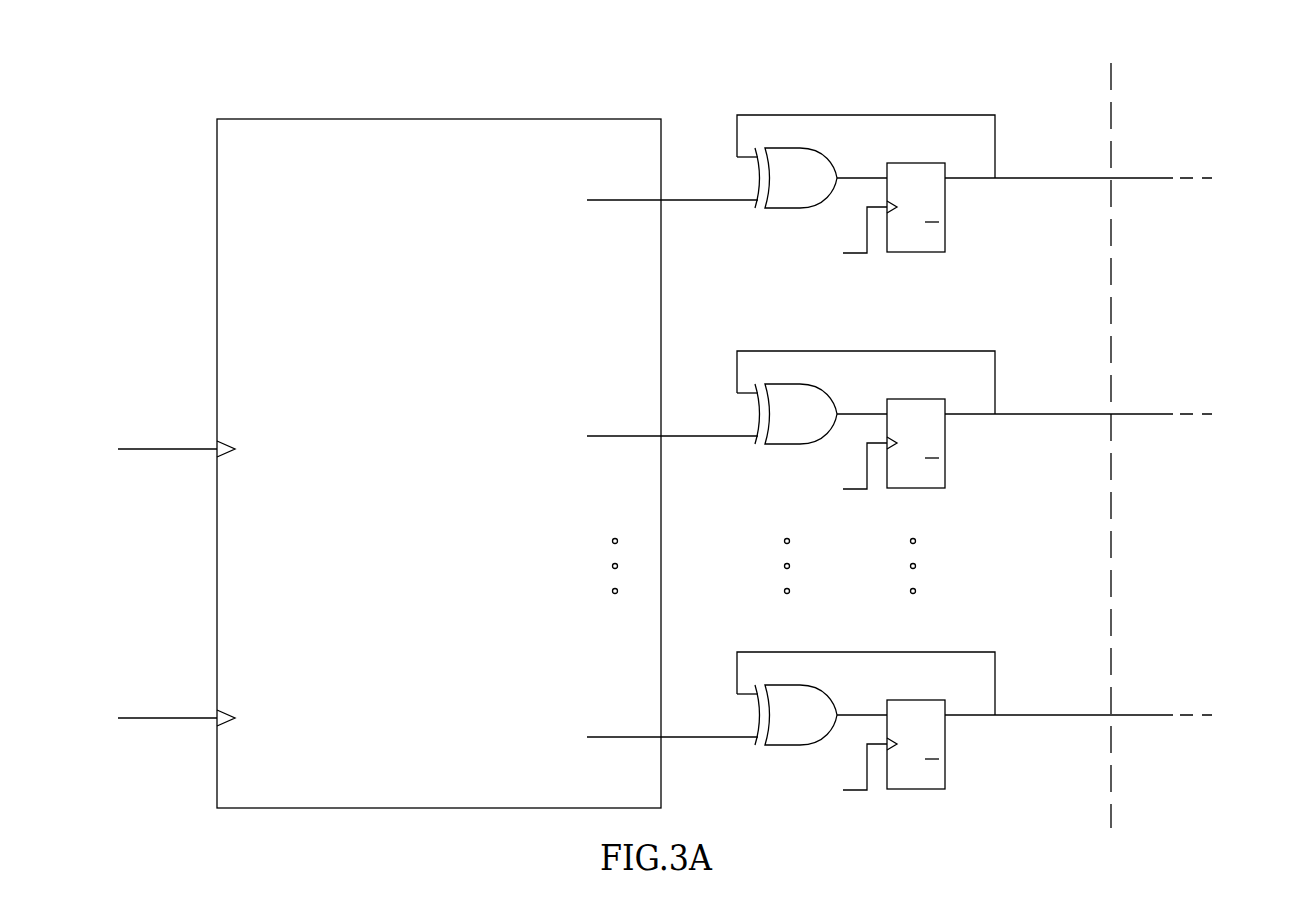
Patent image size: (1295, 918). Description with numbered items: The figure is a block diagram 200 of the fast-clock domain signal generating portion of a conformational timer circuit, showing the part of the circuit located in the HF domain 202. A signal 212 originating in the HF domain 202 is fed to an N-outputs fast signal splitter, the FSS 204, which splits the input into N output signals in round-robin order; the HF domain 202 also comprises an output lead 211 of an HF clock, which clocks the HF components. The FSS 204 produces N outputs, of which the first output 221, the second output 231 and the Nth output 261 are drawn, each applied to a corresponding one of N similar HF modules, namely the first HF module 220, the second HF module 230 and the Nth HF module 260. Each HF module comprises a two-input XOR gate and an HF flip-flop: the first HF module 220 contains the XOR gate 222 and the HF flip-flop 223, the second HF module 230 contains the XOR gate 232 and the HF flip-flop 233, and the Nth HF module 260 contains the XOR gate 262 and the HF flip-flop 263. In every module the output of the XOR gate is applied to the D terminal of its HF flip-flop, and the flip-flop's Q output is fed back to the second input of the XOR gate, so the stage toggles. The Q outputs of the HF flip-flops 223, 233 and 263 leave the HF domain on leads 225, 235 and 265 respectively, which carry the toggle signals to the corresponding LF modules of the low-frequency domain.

The block diagram 200 is at (1182, 78).
The HF domain 202 is at (636, 74).
The N-outputs FSS 204 is at (488, 119).
The output lead of an HF clock 211 is at (160, 724).
The signal 212 is at (160, 455).
The HF module 220 is at (952, 106).
The output of FSS 221 is at (624, 205).
The two-input XOR gate 222 is at (822, 152).
The HF flip-flop 223 is at (913, 252).
The lead 225 is at (1078, 182).
The HF module 230 is at (952, 342).
The output of FSS 231 is at (624, 441).
The two-input XOR gate 232 is at (822, 388).
The HF flip-flop 233 is at (913, 488).
The lead 235 is at (1078, 418).
The HF module 260 is at (952, 643).
The output of FSS 261 is at (624, 742).
The two-input XOR gate 262 is at (822, 689).
The HF flip-flop 263 is at (913, 789).
The lead 265 is at (1078, 719).